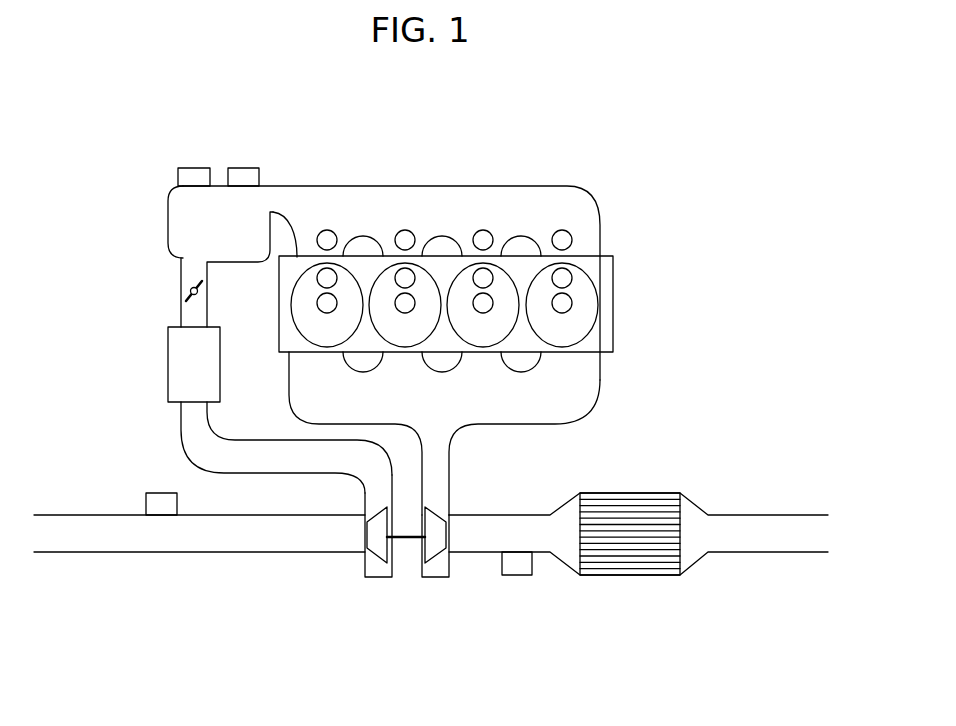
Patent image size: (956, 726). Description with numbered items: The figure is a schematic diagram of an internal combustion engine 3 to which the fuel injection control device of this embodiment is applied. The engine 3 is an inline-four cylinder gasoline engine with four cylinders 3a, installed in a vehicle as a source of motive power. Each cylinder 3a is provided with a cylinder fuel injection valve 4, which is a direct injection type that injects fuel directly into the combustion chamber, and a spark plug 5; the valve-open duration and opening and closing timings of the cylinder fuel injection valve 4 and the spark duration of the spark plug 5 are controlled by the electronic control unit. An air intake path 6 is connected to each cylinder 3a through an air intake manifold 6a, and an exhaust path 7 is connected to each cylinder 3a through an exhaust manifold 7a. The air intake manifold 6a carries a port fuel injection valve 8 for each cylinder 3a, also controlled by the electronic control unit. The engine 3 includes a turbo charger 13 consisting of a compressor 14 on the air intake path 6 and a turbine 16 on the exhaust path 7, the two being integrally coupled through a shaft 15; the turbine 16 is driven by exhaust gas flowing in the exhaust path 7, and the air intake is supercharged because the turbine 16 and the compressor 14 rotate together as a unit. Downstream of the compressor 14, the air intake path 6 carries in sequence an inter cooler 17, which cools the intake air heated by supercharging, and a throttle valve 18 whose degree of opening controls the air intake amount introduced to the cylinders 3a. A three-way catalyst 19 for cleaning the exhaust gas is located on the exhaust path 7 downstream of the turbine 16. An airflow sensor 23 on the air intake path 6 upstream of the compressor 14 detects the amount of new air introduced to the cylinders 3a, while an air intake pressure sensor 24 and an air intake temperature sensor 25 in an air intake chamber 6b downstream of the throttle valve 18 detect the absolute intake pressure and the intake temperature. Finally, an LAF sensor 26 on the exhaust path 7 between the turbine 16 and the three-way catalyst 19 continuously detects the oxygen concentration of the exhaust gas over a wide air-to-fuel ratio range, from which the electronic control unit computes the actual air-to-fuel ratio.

The internal combustion engine 3 is at (528, 176).
The cylinder 3a is at (350, 266).
The cylinder fuel injection valve 4 is at (319, 276).
The spark plug 5 is at (327, 313).
The air intake path 6 is at (153, 552).
The air intake manifold 6a is at (445, 186).
The air intake chamber 6b is at (168, 223).
The exhaust path 7 is at (524, 515).
The exhaust manifold 7a is at (600, 372).
The port fuel injection valve 8 is at (335, 231).
The turbo charger 13 is at (438, 588).
The compressor 14 is at (372, 558).
The shaft 15 is at (405, 540).
The turbine 16 is at (436, 507).
The inter cooler 17 is at (168, 355).
The throttle valve 18 is at (182, 288).
The three-way catalyst 19 is at (637, 493).
The airflow sensor 23 is at (162, 493).
The air intake pressure sensor 24 is at (193, 167).
The air intake temperature sensor 25 is at (242, 167).
The LAF sensor 26 is at (518, 575).